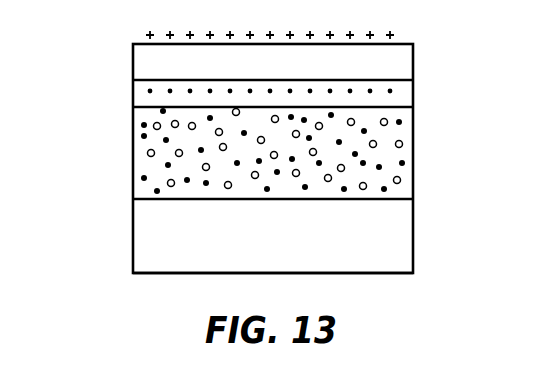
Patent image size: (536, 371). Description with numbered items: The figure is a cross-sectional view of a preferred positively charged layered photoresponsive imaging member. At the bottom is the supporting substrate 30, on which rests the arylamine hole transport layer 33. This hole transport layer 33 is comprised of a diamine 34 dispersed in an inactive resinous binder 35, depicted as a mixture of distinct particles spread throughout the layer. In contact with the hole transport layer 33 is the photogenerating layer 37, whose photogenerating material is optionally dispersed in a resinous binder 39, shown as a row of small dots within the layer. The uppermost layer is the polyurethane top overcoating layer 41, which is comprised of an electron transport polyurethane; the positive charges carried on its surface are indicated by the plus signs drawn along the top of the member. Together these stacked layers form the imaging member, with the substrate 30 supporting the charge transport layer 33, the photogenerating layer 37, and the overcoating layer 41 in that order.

The supporting substrate 30 is at (413, 222).
The arylamine hole transport layer 33 is at (413, 148).
The diamine 34 is at (147, 153).
The inactive resinous binder 35 is at (141, 178).
The photogenerating layer 37 is at (413, 93).
The resinous binder 39 is at (145, 90).
The polyurethane top overcoating layer 41 is at (413, 55).